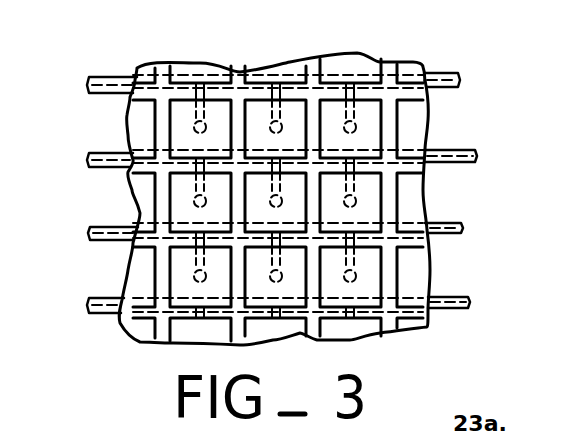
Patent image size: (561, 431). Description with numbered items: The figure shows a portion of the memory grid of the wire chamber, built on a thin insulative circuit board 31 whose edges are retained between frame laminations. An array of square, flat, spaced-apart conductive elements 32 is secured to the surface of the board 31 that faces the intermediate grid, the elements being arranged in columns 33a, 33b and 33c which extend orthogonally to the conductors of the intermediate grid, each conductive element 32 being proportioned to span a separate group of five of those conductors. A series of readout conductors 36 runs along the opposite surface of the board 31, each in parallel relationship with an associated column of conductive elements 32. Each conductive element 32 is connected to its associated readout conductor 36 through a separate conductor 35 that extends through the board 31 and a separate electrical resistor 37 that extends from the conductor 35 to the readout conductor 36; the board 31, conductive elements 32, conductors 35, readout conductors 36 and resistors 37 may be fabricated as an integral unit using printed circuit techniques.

The circuit board 31 is at (163, 333).
The conductive element 32 is at (140, 135).
The column 33a is at (452, 120).
The column 33b is at (452, 193).
The column 33c is at (452, 268).
The conductor 35 is at (196, 275).
The readout conductor 36 is at (108, 77).
The electrical resistor 37 is at (196, 199).